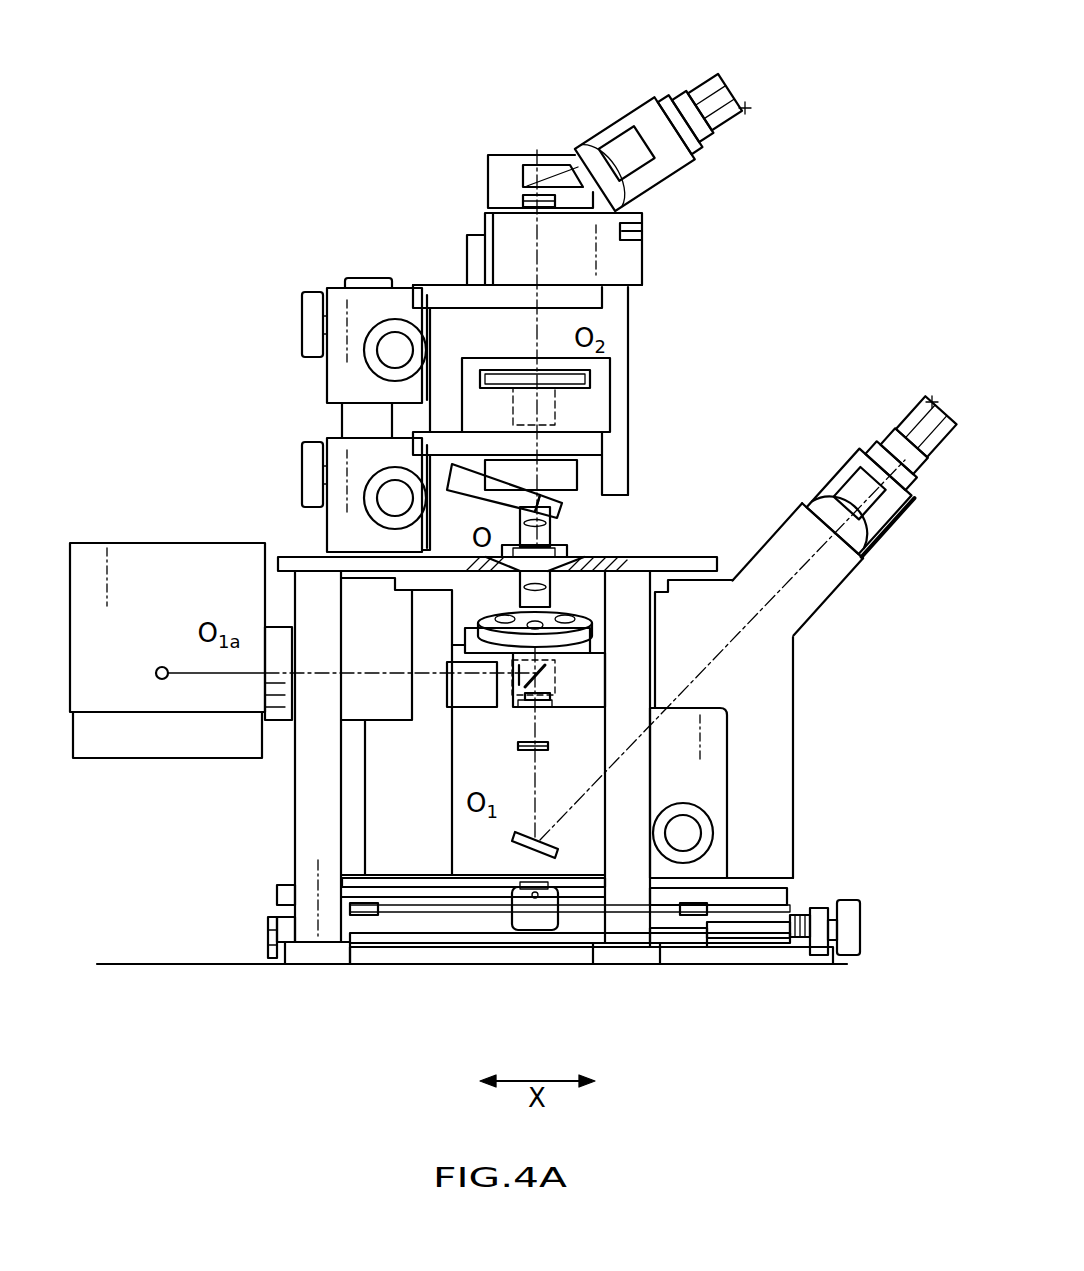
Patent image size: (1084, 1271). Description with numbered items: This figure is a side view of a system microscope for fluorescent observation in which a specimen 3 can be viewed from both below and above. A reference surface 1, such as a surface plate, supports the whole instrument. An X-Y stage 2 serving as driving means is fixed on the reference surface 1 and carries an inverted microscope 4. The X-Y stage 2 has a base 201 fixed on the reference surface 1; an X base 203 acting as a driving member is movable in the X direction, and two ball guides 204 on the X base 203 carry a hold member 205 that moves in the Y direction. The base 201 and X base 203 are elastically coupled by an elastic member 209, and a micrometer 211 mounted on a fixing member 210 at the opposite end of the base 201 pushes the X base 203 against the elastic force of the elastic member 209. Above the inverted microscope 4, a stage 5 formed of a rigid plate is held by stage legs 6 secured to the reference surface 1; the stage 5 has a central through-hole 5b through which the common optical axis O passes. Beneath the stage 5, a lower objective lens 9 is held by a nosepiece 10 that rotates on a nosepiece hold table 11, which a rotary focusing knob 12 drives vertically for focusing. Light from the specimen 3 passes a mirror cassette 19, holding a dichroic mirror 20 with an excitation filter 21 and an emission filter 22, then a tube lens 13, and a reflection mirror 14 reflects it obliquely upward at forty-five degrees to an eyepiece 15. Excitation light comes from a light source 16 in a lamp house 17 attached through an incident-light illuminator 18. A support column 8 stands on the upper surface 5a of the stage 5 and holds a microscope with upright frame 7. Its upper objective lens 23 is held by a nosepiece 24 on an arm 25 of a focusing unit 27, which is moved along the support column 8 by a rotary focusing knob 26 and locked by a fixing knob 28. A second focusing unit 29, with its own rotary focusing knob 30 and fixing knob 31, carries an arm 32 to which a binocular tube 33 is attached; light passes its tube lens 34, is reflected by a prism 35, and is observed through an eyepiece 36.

The reference surface 1 is at (138, 962).
The X-Y stage 2 is at (270, 905).
The specimen 3 is at (568, 549).
The inverted microscope 4 is at (822, 759).
The stage 5 is at (706, 556).
The upper surface 5a is at (674, 556).
The through-hole 5b is at (552, 574).
The stage legs 6 is at (652, 637).
The microscope with upright frame 7 is at (738, 393).
The support column 8 is at (367, 281).
The lower objective lens 9 is at (518, 587).
The nosepiece 10 is at (588, 621).
The nosepiece hold table 11 is at (464, 641).
The rotary focusing knob 12 is at (684, 832).
The tube lens 13 is at (522, 749).
The reflection mirror 14 is at (513, 845).
The eyepiece 15 is at (914, 440).
The light source 16 is at (157, 668).
The lamp house 17 is at (190, 543).
The incident-light illuminator 18 is at (280, 722).
The mirror cassette 19 is at (582, 671).
The dichroic mirror 20 is at (547, 673).
The excitation filter 21 is at (514, 690).
The emission filter 22 is at (528, 702).
The upper objective lens 23 is at (553, 522).
The nosepiece 24 is at (463, 486).
The arm 25 is at (600, 440).
The rotary focusing knob 26 is at (382, 502).
The focusing unit 27 is at (336, 447).
The fixing knob 28 is at (303, 471).
The focusing unit 29 is at (338, 298).
The rotary focusing knob 30 is at (385, 353).
The fixing knob 31 is at (303, 321).
The arm 32 is at (598, 298).
The binocular tube 33 is at (577, 147).
The tube lens 34 is at (522, 200).
The prism 35 is at (557, 168).
The eyepiece 36 is at (718, 100).
The base 201 is at (563, 966).
The X base 203 is at (750, 940).
The ball guides 204 is at (365, 916).
The hold member 205 is at (790, 893).
The elastic member 209 is at (266, 937).
The fixing member 210 is at (818, 957).
The micrometer 211 is at (862, 912).